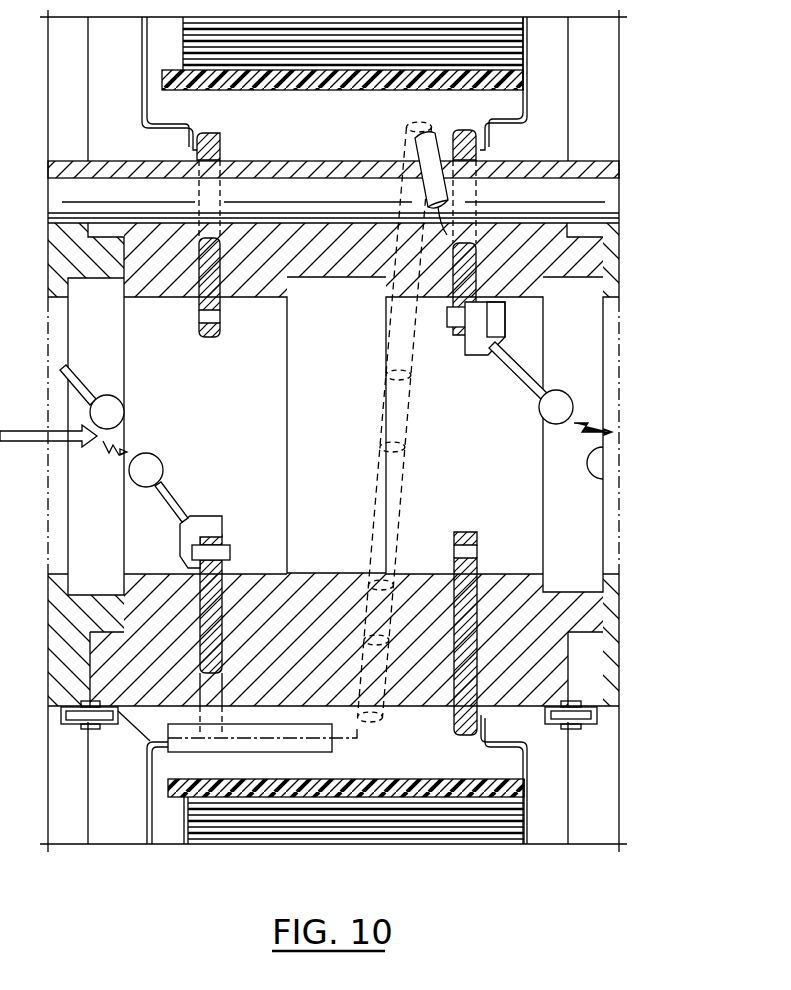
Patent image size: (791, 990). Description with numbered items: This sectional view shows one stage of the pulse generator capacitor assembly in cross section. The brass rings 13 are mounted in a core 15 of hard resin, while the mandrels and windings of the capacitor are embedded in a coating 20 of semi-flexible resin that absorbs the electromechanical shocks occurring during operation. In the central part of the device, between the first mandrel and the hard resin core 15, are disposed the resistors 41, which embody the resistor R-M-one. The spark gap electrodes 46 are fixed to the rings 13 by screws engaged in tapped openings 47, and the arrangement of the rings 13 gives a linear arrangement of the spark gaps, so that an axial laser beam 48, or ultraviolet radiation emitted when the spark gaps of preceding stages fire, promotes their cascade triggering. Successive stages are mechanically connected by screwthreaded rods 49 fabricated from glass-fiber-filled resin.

The coating 20 is at (603, 105).
The screwthreaded rods 49 is at (605, 199).
The core 15 is at (595, 263).
The brass rings 13 is at (221, 305).
The resistors 41 is at (392, 350).
The tapped openings 47 is at (463, 340).
The spark gap electrodes 46 is at (153, 457).
The axial laser beam 48 is at (48, 414).